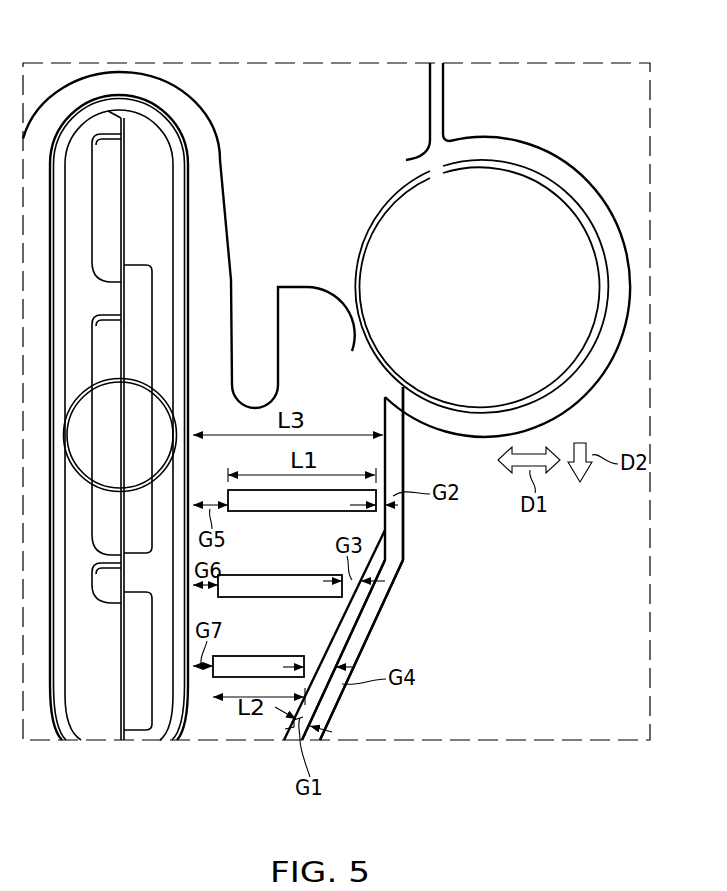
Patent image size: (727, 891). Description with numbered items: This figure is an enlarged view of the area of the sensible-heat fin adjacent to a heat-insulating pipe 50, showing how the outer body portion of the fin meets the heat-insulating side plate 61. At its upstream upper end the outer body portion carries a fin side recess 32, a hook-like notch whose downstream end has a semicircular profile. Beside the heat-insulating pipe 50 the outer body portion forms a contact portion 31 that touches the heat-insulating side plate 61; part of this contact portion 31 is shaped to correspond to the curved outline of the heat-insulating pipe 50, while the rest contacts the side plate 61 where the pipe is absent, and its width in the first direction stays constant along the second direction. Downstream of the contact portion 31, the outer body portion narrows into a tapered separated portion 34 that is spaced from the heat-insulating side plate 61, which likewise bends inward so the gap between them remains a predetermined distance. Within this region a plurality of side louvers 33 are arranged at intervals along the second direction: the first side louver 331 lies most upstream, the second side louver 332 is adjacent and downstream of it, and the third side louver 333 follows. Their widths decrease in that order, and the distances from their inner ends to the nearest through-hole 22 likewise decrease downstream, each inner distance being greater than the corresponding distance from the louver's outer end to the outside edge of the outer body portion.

The through-hole 22 is at (192, 148).
The contact portion 31 is at (350, 352).
The fin side recess 32 is at (262, 376).
The side louvers 33 is at (540, 543).
The first side louver 331 is at (405, 510).
The second side louver 332 is at (405, 584).
The third side louver 333 is at (362, 657).
The separated portion 34 is at (352, 616).
The heat-insulating pipe 50 is at (588, 347).
The heat-insulating side plate 61 is at (338, 698).